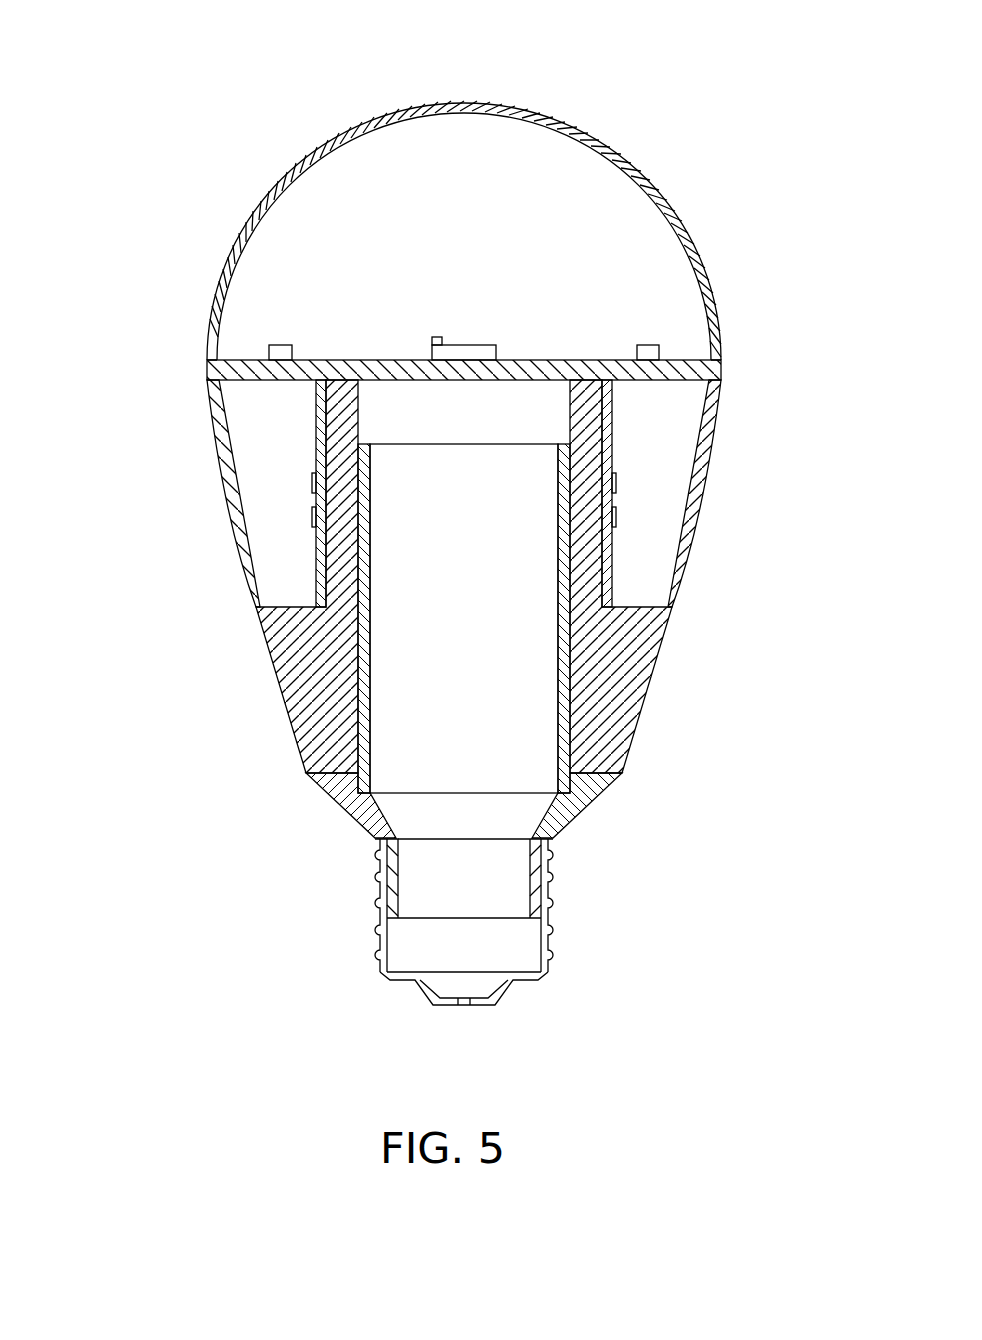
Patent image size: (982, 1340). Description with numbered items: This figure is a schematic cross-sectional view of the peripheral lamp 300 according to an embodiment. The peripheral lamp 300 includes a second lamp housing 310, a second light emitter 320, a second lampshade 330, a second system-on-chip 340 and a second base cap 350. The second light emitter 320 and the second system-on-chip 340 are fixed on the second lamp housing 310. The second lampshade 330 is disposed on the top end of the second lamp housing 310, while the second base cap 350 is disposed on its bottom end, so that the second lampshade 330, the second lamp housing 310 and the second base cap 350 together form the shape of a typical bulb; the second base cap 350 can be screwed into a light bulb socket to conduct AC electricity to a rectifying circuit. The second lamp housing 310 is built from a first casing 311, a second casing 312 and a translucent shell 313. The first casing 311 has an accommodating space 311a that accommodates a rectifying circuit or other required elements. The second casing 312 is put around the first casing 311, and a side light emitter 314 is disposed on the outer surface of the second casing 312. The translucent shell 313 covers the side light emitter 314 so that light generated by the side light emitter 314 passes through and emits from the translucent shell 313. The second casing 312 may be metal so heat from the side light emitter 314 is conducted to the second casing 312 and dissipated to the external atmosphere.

The peripheral lamp 300 is at (160, 46).
The second lamp housing 310 is at (107, 553).
The first casing 311 is at (356, 822).
The accommodating space 311a is at (497, 690).
The second casing 312 is at (288, 677).
The translucent shell 313 is at (243, 553).
The side light emitter 314 is at (316, 428).
The second light emitter 320 is at (652, 345).
The second lampshade 330 is at (590, 137).
The second system-on-chip 340 is at (467, 353).
The second base cap 350 is at (553, 950).